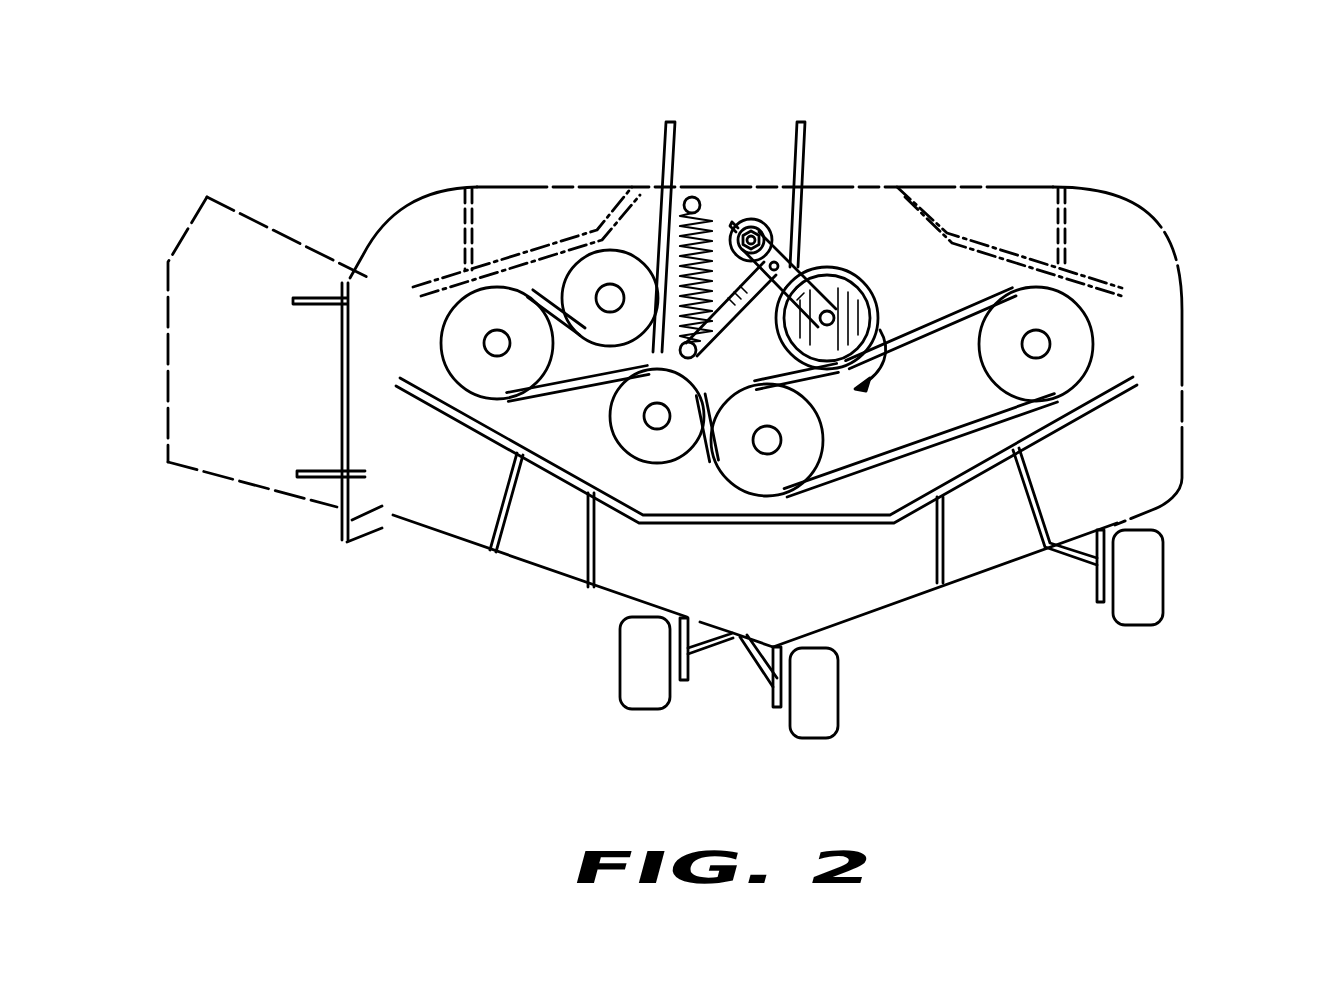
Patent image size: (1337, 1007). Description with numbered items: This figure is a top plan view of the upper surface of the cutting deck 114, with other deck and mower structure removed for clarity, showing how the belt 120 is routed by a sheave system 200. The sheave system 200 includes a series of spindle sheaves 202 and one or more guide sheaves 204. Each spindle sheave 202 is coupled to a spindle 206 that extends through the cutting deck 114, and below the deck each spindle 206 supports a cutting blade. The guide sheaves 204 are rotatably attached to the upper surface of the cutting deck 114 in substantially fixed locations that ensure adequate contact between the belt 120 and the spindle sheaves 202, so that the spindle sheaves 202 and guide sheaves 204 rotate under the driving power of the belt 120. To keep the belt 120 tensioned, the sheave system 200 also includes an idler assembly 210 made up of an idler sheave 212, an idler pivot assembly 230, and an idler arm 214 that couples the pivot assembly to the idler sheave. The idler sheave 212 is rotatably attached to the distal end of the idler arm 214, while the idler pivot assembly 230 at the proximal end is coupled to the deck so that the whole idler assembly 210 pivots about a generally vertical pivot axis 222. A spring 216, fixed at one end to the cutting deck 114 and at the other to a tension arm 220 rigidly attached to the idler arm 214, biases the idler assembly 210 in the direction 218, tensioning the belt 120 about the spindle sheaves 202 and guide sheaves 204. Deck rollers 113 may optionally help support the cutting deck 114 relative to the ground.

The deck rollers 113 is at (797, 740).
The cutting deck 114 is at (367, 255).
The belt 120 is at (660, 150).
The sheave system 200 is at (527, 390).
The spindle sheaves 202 is at (443, 330).
The guide sheaves 204 is at (570, 268).
The spindle 206 is at (488, 352).
The idler assembly 210 is at (810, 259).
The idler sheave 212 is at (877, 296).
The idler arm 214 is at (791, 272).
The spring 216 is at (718, 213).
The direction 218 is at (883, 348).
The tension arm 220 is at (722, 340).
The pivot axis 222 is at (803, 255).
The idler pivot assembly 230 is at (763, 200).